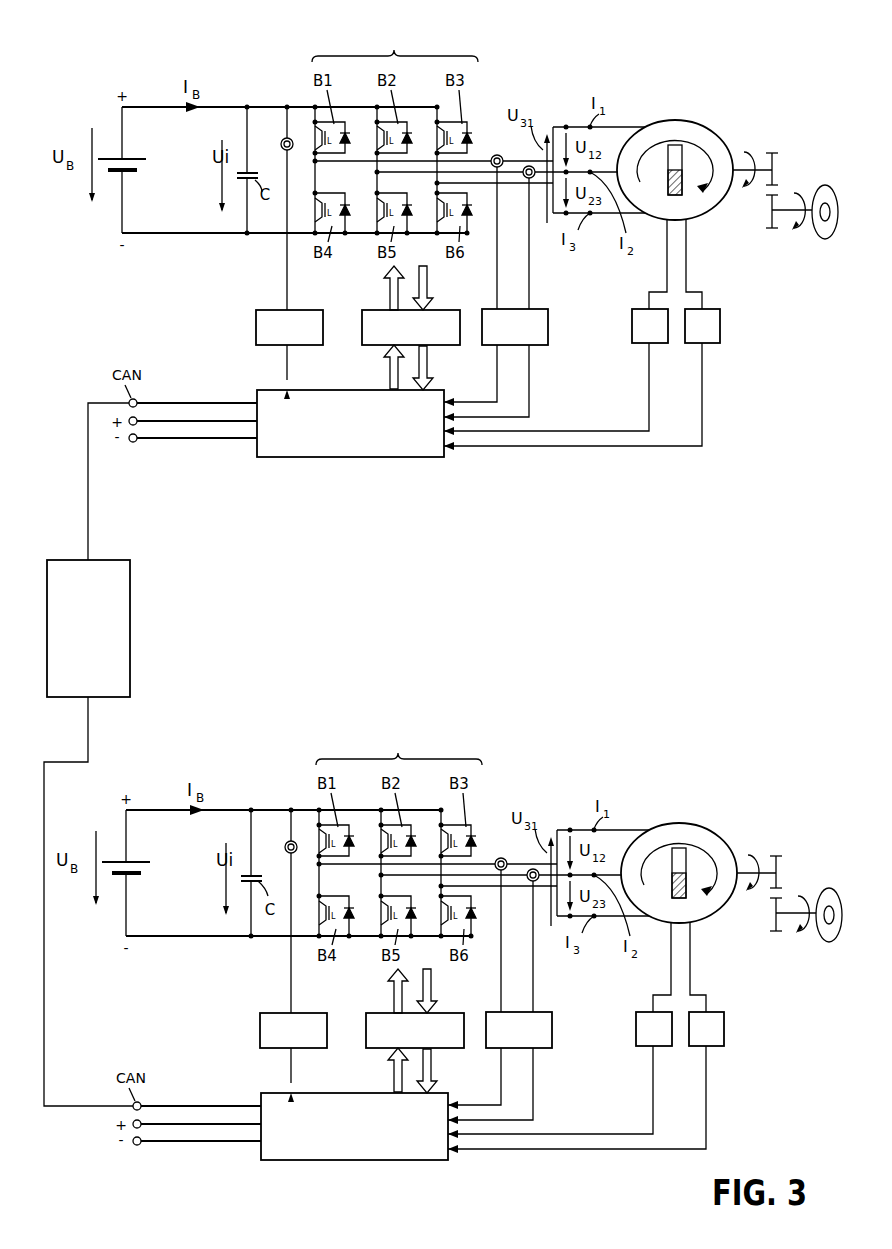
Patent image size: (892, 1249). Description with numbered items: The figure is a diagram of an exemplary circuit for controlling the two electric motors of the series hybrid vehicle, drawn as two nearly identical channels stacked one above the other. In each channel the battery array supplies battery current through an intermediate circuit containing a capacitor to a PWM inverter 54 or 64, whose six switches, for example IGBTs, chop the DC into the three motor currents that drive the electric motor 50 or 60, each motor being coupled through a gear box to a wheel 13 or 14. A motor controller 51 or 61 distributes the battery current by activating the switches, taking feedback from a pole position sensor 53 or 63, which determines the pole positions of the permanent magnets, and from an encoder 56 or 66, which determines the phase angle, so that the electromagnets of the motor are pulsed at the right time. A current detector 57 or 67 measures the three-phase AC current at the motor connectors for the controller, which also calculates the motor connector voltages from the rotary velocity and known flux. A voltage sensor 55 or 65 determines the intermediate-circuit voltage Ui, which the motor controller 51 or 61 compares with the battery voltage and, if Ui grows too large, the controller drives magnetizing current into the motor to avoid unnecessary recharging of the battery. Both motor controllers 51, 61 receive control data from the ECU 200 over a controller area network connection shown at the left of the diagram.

The PWM inverter 54 is at (395, 132).
The voltage sensor 55 is at (262, 320).
The current detector 57 is at (537, 320).
The motor controller 51 is at (407, 448).
The electric motor 50 is at (692, 125).
The wheel 13 is at (823, 184).
The encoder 56 is at (638, 312).
The pole position sensor 53 is at (712, 320).
The ECU 200 is at (131, 630).
The PWM inverter 64 is at (399, 846).
The voltage sensor 65 is at (277, 955).
The current detector 67 is at (517, 991).
The motor controller 61 is at (354, 1141).
The electric motor 60 is at (679, 861).
The wheel 14 is at (828, 893).
The encoder 66 is at (560, 1030).
The pole position sensor 63 is at (602, 1037).